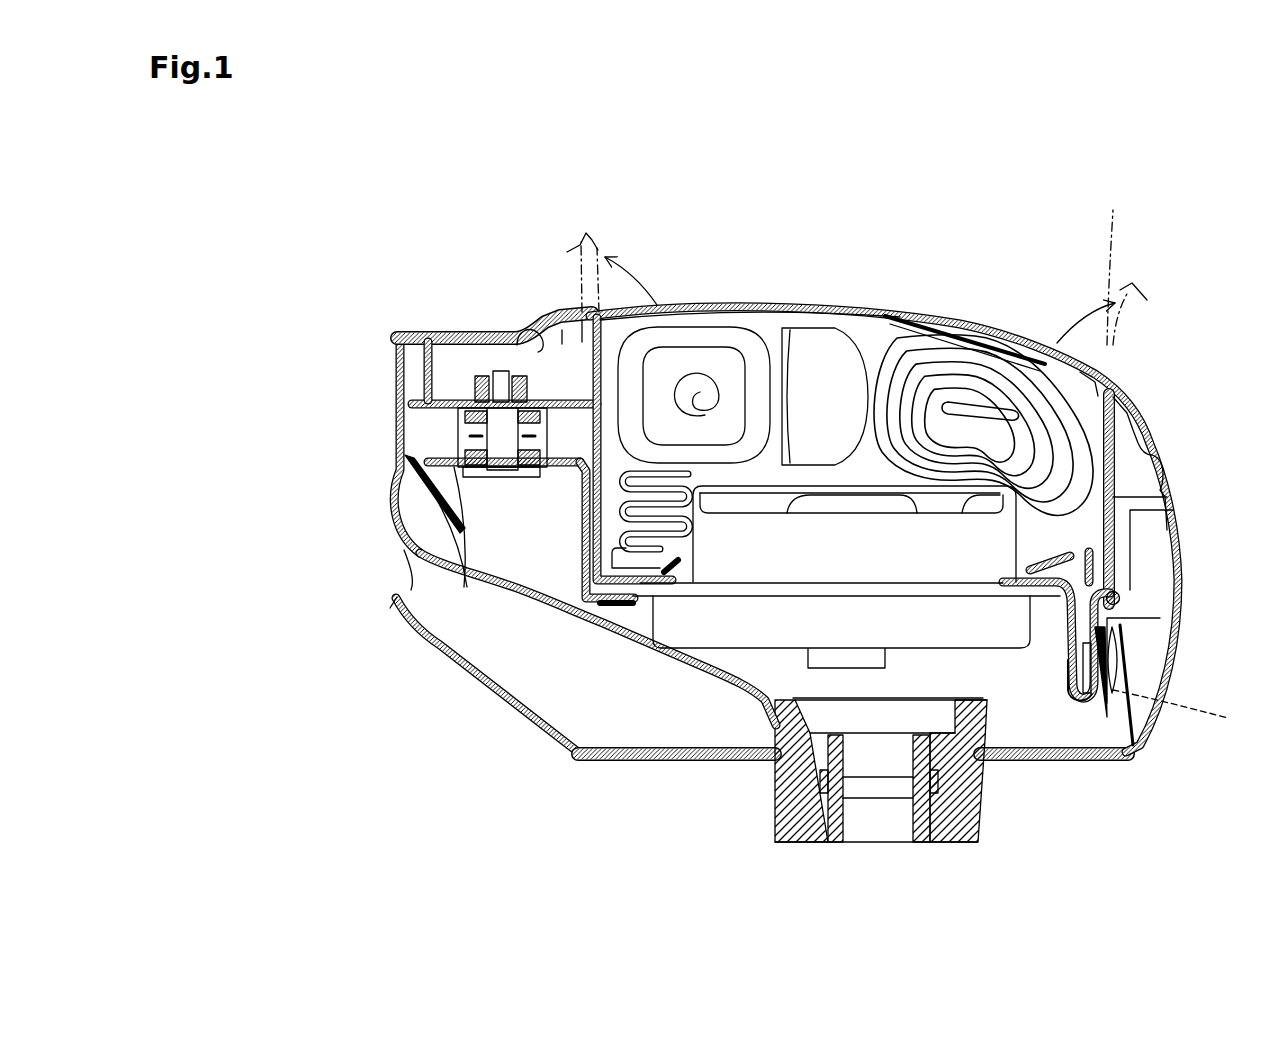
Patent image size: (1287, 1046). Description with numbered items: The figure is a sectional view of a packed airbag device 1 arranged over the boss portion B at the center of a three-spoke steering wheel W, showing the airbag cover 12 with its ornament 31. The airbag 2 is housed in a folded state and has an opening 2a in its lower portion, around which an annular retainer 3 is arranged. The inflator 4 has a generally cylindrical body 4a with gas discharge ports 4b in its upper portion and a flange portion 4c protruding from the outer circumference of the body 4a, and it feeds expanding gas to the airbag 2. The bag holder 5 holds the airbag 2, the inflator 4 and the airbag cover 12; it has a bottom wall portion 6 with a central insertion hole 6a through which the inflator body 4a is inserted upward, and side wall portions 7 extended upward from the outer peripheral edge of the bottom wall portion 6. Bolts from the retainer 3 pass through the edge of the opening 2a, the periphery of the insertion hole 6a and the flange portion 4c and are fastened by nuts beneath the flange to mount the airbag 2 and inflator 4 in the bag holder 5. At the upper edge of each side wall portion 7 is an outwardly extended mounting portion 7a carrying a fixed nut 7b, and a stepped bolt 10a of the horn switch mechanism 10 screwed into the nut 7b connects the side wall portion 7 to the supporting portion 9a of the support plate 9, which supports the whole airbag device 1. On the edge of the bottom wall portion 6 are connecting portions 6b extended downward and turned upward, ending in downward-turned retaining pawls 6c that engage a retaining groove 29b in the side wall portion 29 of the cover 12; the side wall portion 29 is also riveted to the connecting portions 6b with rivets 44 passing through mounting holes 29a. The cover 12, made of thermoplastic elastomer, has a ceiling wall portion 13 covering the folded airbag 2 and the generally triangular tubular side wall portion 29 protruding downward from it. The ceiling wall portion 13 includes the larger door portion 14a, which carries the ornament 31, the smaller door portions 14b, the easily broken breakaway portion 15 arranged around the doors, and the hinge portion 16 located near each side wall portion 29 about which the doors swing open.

The airbag device 1 is at (955, 702).
The airbag 2 is at (866, 348).
The opening 2a is at (672, 575).
The annular retainer 3 is at (668, 562).
The inflator 4 is at (750, 660).
The body 4a is at (905, 557).
The gas discharge ports 4b is at (842, 507).
The flange portion 4c is at (703, 590).
The bag holder 5 is at (1088, 706).
The bottom wall portion 6 is at (633, 606).
The insertion hole 6a is at (992, 590).
The connecting portions 6b is at (1068, 618).
The retaining pawls 6c is at (1122, 598).
The side wall portions 7 is at (588, 408).
The mounting portion 7a is at (420, 398).
The nut 7b is at (475, 395).
The support plate 9 is at (605, 645).
The supporting portion 9a is at (568, 475).
The horn switch mechanism 10 is at (504, 489).
The stepped bolt 10a is at (498, 371).
The airbag cover 12 is at (712, 288).
The ceiling wall portion 13 is at (752, 303).
The larger door portion 14a is at (1082, 348).
The smaller door portions 14b is at (598, 250).
The breakaway portion 15 is at (880, 310).
The hinge portion 16 is at (577, 303).
The side wall portion 29 is at (1132, 532).
The mounting holes 29a is at (1189, 685).
The retaining groove 29b is at (1160, 618).
The ornament 31 is at (955, 336).
The rivets 44 is at (1120, 660).
The steering wheel W is at (458, 722).
The boss portion B is at (758, 808).